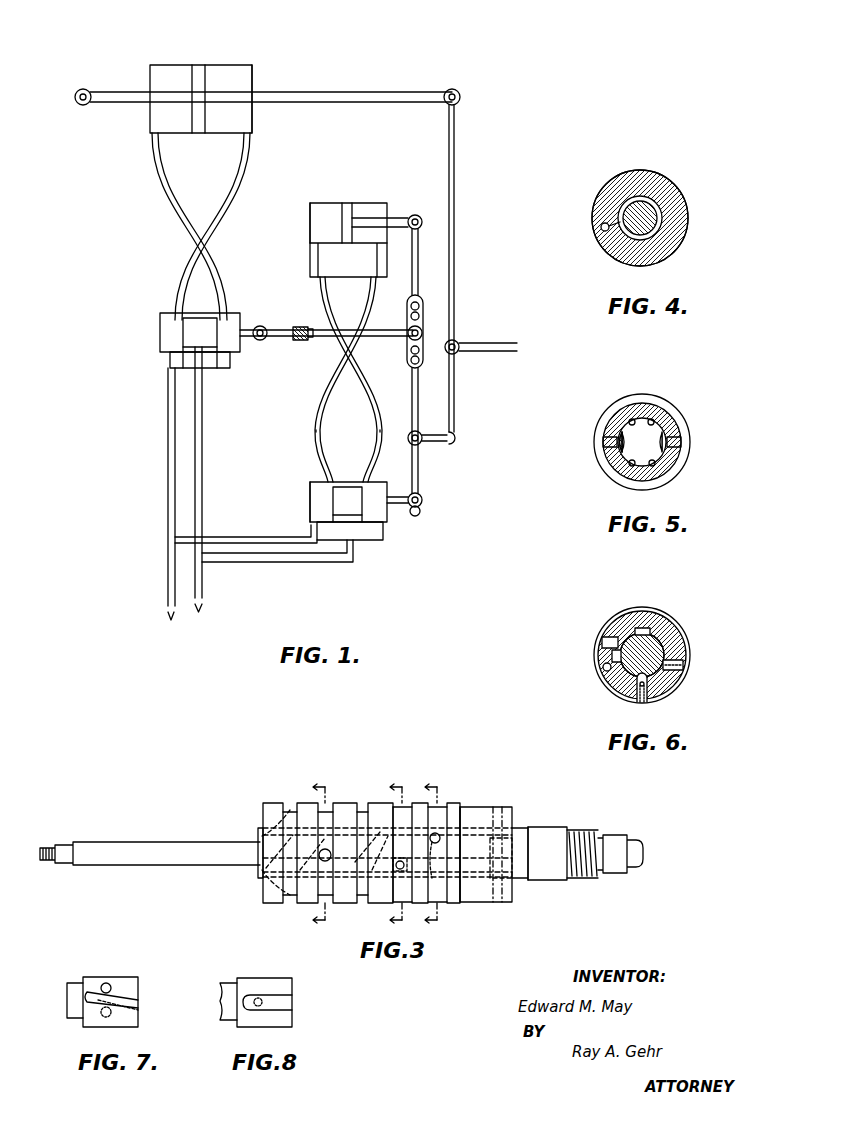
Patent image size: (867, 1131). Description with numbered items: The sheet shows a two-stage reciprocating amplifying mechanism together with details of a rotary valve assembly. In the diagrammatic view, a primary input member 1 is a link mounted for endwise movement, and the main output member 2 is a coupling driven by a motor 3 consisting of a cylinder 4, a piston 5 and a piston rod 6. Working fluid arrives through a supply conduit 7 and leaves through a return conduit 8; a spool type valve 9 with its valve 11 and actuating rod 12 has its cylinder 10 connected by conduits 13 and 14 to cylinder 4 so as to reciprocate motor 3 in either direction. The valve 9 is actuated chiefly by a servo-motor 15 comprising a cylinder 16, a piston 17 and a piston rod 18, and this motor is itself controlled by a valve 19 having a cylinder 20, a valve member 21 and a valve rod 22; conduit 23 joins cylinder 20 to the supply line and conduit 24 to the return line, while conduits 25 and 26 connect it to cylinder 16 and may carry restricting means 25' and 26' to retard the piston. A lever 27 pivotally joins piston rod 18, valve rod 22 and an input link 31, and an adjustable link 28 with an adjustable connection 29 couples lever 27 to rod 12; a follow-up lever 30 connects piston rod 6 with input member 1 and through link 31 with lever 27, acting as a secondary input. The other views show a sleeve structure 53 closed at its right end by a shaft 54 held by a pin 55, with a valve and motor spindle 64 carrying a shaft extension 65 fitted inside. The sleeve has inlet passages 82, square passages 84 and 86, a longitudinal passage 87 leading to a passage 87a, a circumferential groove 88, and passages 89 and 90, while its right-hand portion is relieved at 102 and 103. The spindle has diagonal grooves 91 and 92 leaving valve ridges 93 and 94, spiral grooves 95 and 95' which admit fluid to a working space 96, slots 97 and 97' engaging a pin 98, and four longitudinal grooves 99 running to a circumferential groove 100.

In FIG. 1, the primary input member 1 is at (506, 355).
In FIG. 1, the main output member 2 is at (77, 105).
In FIG. 1, the motor 3 is at (222, 66).
In FIG. 1, the cylinder 4 is at (252, 64).
In FIG. 3, the cylinder 4 is at (401, 852).
In FIG. 1, the piston 5 is at (196, 72).
In FIG. 3, the piston 5 is at (319, 857).
In FIG. 1, the piston rod 6 is at (348, 94).
In FIG. 3, the piston rod 6 is at (432, 853).
In FIG. 1, the conduit 7 is at (204, 576).
In FIG. 1, the return conduit 8 is at (160, 578).
In FIG. 1, the spool type valve 9 is at (148, 325).
In FIG. 1, the cylinder 10 is at (165, 312).
In FIG. 1, the spool type valve 11 is at (188, 340).
In FIG. 1, the actuating rod 12 is at (252, 325).
In FIG. 1, the conduit 13 is at (226, 206).
In FIG. 1, the conduit 14 is at (160, 196).
In FIG. 1, the servo-motor 15 is at (308, 230).
In FIG. 1, the cylinder 16 is at (320, 203).
In FIG. 1, the piston 17 is at (346, 214).
In FIG. 1, the piston rod 18 is at (374, 218).
In FIG. 1, the valve 19 is at (306, 500).
In FIG. 1, the cylinder 20 is at (312, 481).
In FIG. 1, the valve member 21 is at (343, 498).
In FIG. 1, the valve rod 22 is at (398, 504).
In FIG. 1, the conduit 23 is at (284, 562).
In FIG. 1, the conduit 24 is at (262, 536).
In FIG. 1, the conduit 25 is at (307, 413).
In FIG. 1, the conduit 26 is at (360, 416).
In FIG. 1, the restricting means 25' is at (345, 373).
In FIG. 1, the restricting means 26' is at (332, 373).
In FIG. 1, the lever 27 is at (410, 410).
In FIG. 1, the link 28 is at (308, 339).
In FIG. 1, the adjustable connection 29 is at (406, 340).
In FIG. 1, the follow-up lever 30 is at (456, 245).
In FIG. 1, the link 31 is at (440, 446).
In FIG. 4, the sleeve structure 53 is at (672, 186).
In FIG. 5, the sleeve structure 53 is at (660, 398).
In FIG. 6, the sleeve structure 53 is at (688, 630).
In FIG. 3, the sleeve structure 53 is at (480, 810).
In FIG. 3, the shaft 54 is at (538, 830).
In FIG. 3, the pin 55 is at (506, 885).
In FIG. 4, the valve and motor spindle 64 is at (612, 252).
In FIG. 5, the valve and motor spindle 64 is at (608, 462).
In FIG. 6, the valve and motor spindle 64 is at (670, 624).
In FIG. 3, the valve and motor spindle 64 is at (258, 830).
In FIG. 7, the valve and motor spindle 64 is at (124, 977).
In FIG. 8, the valve and motor spindle 64 is at (250, 980).
In FIG. 3, the shaft extension 65 is at (130, 842).
In FIG. 5, the passages 82 is at (682, 441).
In FIG. 3, the passages 82 is at (330, 849).
In FIG. 3, the passages 84 is at (368, 880).
In FIG. 3, the passages 86 is at (302, 812).
In FIG. 6, the longitudinal passage 87 is at (601, 670).
In FIG. 4, the passage 87a is at (600, 226).
In FIG. 3, the circumferential groove 88 is at (440, 830).
In FIG. 6, the passage 89 is at (600, 640).
In FIG. 3, the passage 89 is at (437, 832).
In FIG. 7, the passage 89 is at (108, 983).
In FIG. 6, the passage 90 is at (608, 680).
In FIG. 3, the passage 90 is at (440, 900).
In FIG. 7, the passage 90 is at (102, 1016).
In FIG. 5, the transverse grooves 91 is at (609, 418).
In FIG. 3, the transverse grooves 91 is at (300, 903).
In FIG. 3, the grooves 92 is at (258, 852).
In FIG. 3, the valve ridges 93 is at (378, 868).
In FIG. 3, the valve ridges 94 is at (262, 866).
In FIG. 6, the groove 95 is at (586, 656).
In FIG. 7, the groove 95 is at (84, 985).
In FIG. 6, the second spiral groove 95' is at (697, 658).
In FIG. 3, the working space 96 is at (492, 885).
In FIG. 6, the slot 97 is at (666, 692).
In FIG. 8, the slot 97 is at (286, 1000).
In FIG. 6, the slot 97' is at (659, 612).
In FIG. 6, the pin 98 is at (636, 700).
In FIG. 8, the pin 98 is at (262, 998).
In FIG. 5, the longitudinal grooves 99 is at (650, 418).
In FIG. 3, the longitudinal grooves 99 is at (256, 826).
In FIG. 4, the circumferential groove 100 is at (655, 232).
In FIG. 3, the circumferential relief 102 is at (410, 805).
In FIG. 3, the circumferential relief 103 is at (466, 808).